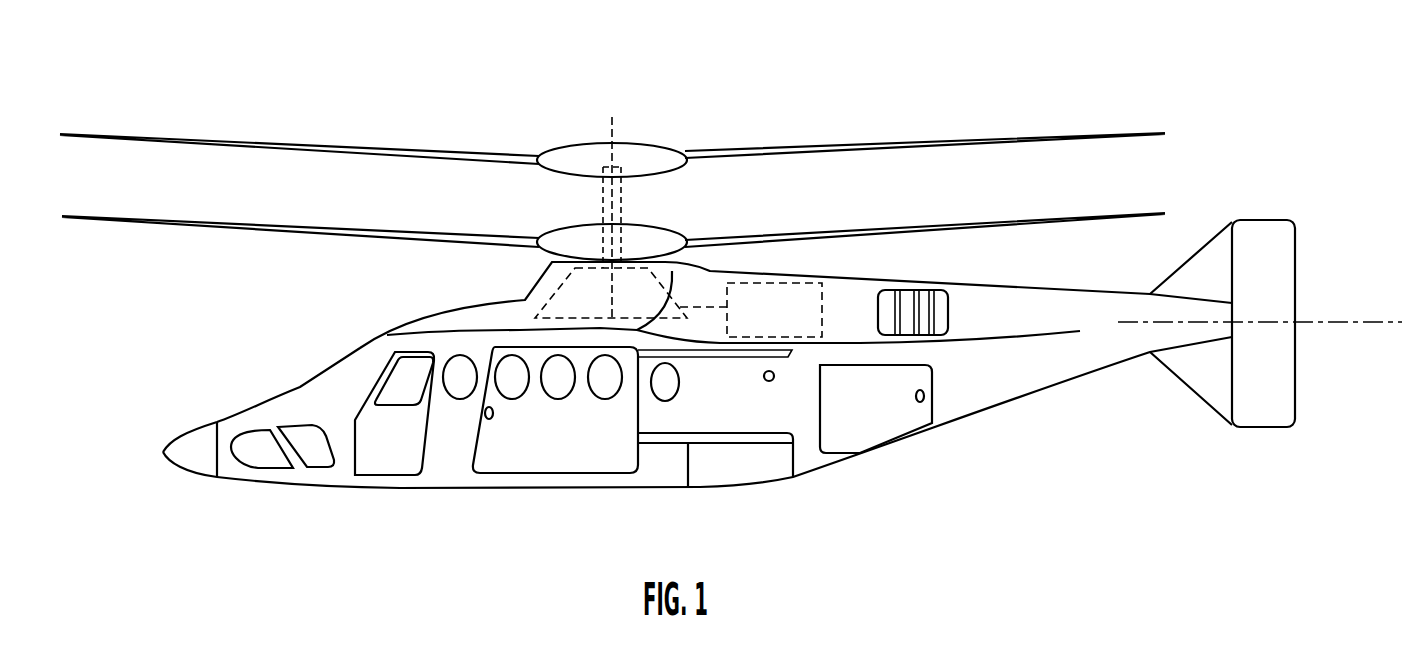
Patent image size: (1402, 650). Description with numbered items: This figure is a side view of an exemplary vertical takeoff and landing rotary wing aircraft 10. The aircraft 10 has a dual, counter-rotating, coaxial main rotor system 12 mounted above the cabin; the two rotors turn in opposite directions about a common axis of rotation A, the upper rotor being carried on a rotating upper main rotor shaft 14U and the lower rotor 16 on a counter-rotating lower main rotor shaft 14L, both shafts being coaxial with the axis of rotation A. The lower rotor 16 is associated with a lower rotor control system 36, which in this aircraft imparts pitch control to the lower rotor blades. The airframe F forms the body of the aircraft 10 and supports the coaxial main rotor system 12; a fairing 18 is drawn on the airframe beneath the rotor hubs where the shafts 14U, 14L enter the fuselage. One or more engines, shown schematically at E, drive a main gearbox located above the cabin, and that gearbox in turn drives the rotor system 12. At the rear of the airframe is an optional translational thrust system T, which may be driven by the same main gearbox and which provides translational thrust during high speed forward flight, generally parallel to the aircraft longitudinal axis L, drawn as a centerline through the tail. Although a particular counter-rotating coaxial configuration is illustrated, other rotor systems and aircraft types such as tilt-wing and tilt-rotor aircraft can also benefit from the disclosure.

The rotary wing aircraft 10 is at (731, 283).
The main rotor system 12 is at (612, 140).
The lower rotor system 16 is at (686, 146).
The upper main rotor shaft 14U is at (623, 200).
The lower main rotor shaft 14L is at (717, 217).
The airframe fairing 18 is at (523, 266).
The lower rotor control system 36 is at (503, 184).
The axis of rotation A is at (612, 116).
The engine E is at (784, 326).
The airframe F is at (557, 458).
The translational thrust system T is at (1282, 182).
The aircraft longitudinal axis L is at (1347, 324).